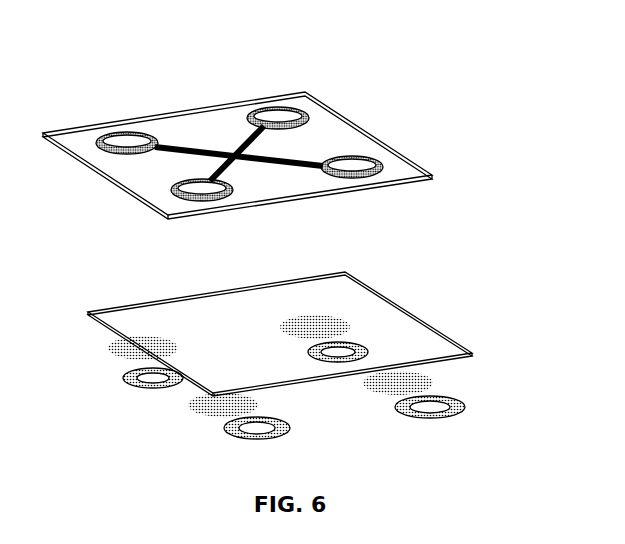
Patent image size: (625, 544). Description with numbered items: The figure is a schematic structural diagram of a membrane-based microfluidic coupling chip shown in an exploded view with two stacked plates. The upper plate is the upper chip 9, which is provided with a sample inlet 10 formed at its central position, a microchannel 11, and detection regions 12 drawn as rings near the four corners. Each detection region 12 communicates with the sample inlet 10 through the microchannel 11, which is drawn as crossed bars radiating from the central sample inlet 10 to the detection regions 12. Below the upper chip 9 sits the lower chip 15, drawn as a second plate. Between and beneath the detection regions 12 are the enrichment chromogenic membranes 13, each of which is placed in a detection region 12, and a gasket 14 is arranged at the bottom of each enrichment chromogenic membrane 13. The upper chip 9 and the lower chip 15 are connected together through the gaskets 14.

The upper chip 9 is at (295, 110).
The sample inlet 10 is at (228, 149).
The microchannel 11 is at (185, 147).
The detection region 12 is at (117, 145).
The enrichment chromogenic membrane 13 is at (130, 345).
The gasket 14 is at (140, 380).
The lower chip 15 is at (358, 311).